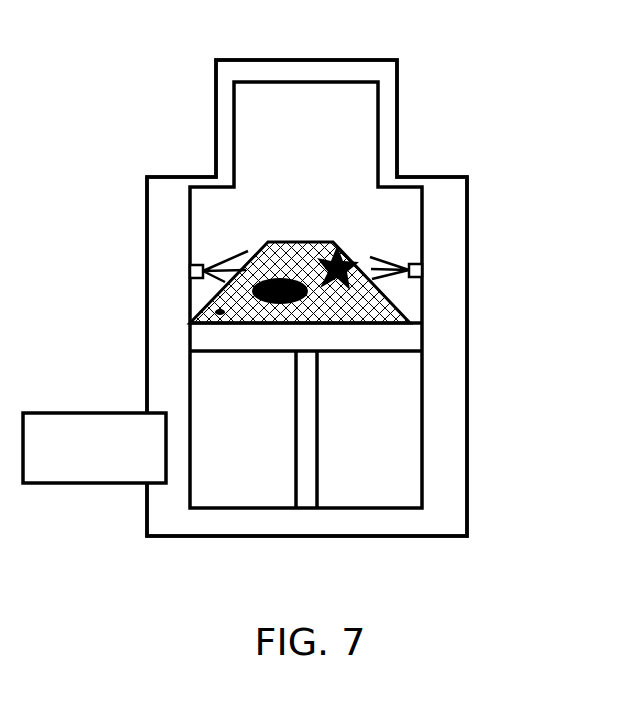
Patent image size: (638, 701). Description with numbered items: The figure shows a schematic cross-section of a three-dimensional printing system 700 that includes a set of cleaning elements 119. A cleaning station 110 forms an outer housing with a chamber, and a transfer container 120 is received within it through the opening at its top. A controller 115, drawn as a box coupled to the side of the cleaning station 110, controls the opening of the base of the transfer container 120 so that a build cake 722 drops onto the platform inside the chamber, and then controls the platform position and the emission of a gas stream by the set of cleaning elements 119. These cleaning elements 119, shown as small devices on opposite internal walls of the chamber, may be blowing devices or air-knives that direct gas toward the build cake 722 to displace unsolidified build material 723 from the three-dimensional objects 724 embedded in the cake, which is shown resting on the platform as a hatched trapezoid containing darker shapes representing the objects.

The three-dimensional printing system 700 is at (307, 274).
The cleaning station 110 is at (482, 370).
The transfer container 120 is at (414, 150).
The controller 115 is at (94, 448).
The set of cleaning elements 119 is at (184, 258).
The build cake 722 is at (340, 234).
The unsolidified build material 723 is at (214, 315).
The three-dimensional objects 724 is at (312, 254).